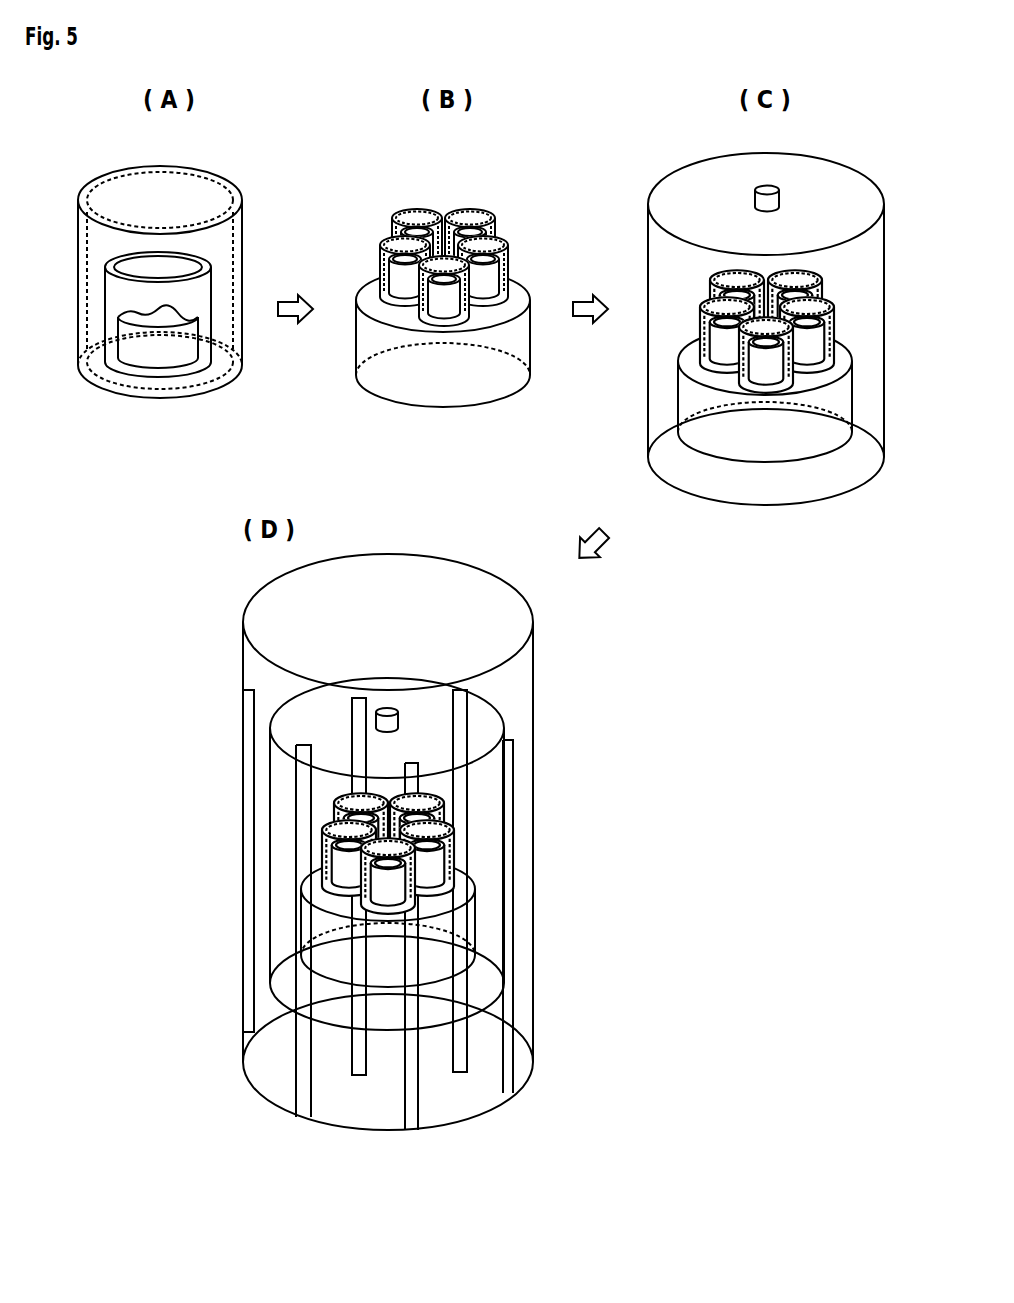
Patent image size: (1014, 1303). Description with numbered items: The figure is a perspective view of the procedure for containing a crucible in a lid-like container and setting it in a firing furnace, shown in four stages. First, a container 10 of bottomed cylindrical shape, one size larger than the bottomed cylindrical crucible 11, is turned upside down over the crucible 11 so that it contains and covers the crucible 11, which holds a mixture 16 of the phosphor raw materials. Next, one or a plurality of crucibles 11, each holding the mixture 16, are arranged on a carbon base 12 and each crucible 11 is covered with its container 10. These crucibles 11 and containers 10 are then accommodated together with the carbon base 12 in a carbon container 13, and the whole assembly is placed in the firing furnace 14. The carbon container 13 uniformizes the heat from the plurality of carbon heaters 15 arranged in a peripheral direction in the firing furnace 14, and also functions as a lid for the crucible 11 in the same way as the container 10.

The container 10 is at (242, 238).
The crucible 11 is at (212, 293).
The carbon base 12 is at (448, 378).
The carbon container 13 is at (647, 235).
The firing furnace 14 is at (546, 674).
The carbon heater 15 is at (512, 946).
The mixture of the phosphor raw materials 16 is at (152, 350).